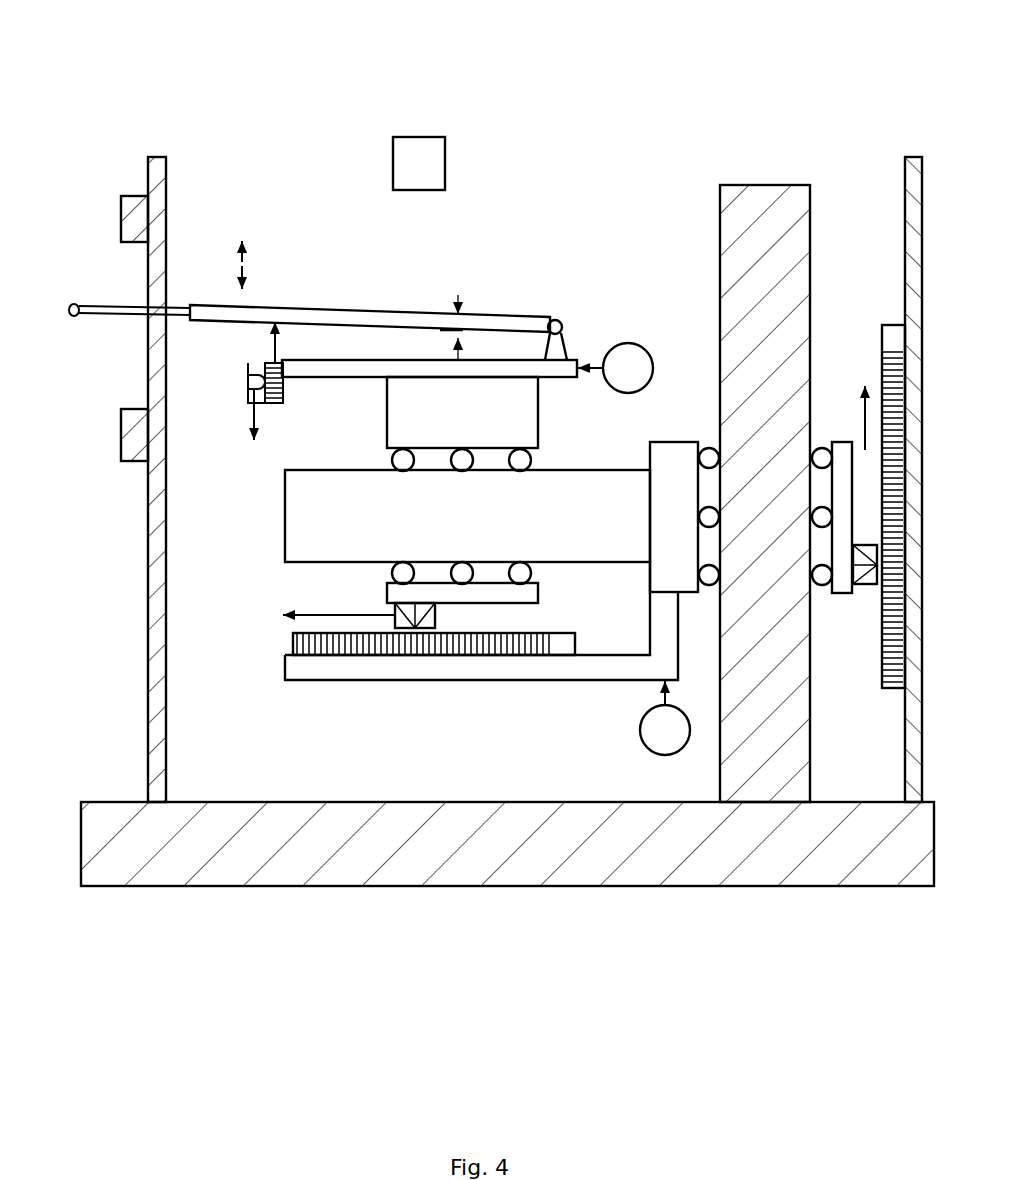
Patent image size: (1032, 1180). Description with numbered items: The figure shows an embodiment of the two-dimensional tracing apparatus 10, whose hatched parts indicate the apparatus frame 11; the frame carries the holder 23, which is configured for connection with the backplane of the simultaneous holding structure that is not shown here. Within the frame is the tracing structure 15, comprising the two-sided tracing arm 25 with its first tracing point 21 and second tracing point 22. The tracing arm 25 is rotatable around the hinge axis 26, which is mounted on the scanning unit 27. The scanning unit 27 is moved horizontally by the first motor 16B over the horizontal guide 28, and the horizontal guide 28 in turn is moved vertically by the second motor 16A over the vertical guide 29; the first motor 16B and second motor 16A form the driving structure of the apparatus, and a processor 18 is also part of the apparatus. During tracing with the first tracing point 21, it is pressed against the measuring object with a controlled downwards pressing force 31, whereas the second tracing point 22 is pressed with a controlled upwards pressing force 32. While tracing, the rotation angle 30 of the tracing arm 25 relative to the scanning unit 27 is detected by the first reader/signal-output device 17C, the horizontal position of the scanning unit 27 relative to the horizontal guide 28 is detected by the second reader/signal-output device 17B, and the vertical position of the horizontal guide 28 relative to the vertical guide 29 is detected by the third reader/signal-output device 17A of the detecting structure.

The two-dimensional tracing apparatus 10 is at (220, 63).
The apparatus frame 11 is at (127, 164).
The tracing structure 15 is at (245, 149).
The second motor 16A is at (646, 718).
The first motor 16B is at (623, 344).
The third reader/signal-output device 17A is at (875, 618).
The second reader/signal-output device 17B is at (322, 592).
The first reader/signal-output device 17C is at (245, 422).
The processor 18 is at (415, 137).
The first tracing point 21 is at (72, 318).
The second tracing point 22 is at (72, 302).
The holder of the apparatus frame 23 is at (120, 215).
The tracing arm 25 is at (320, 308).
The hinge axis 26 is at (557, 320).
The scanning unit 27 is at (570, 358).
The horizontal guide 28 is at (548, 563).
The vertical guide 29 is at (745, 185).
The rotation angle 30 is at (458, 295).
The controlled downwards pressing force 31 is at (245, 288).
The controlled upwards pressing force 32 is at (243, 240).